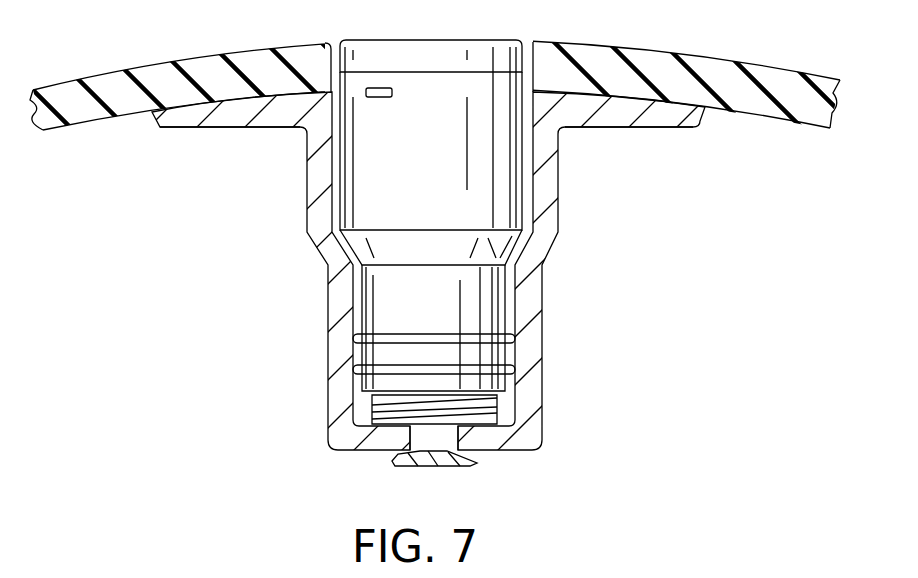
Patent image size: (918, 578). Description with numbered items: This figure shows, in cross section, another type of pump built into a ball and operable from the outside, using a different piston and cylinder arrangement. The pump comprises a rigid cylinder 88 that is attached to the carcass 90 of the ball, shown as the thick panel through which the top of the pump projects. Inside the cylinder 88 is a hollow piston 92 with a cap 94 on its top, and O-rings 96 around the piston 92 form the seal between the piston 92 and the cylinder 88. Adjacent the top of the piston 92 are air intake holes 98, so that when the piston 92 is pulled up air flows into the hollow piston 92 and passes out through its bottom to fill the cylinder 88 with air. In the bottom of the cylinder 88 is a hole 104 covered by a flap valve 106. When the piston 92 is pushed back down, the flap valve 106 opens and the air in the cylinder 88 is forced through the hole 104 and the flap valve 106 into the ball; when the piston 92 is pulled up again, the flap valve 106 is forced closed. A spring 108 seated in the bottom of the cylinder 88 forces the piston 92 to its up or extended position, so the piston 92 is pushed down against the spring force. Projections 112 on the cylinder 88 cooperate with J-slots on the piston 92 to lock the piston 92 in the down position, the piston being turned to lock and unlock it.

The rigid cylinder 88 is at (546, 247).
The carcass 90 is at (618, 72).
The piston 92 is at (365, 205).
The cap 94 is at (484, 44).
The O-rings 96 is at (513, 372).
The air intake holes 98 is at (379, 98).
The hole 104 is at (421, 434).
The flap valve 106 is at (462, 464).
The spring 108 is at (373, 422).
The projections 112 is at (332, 109).